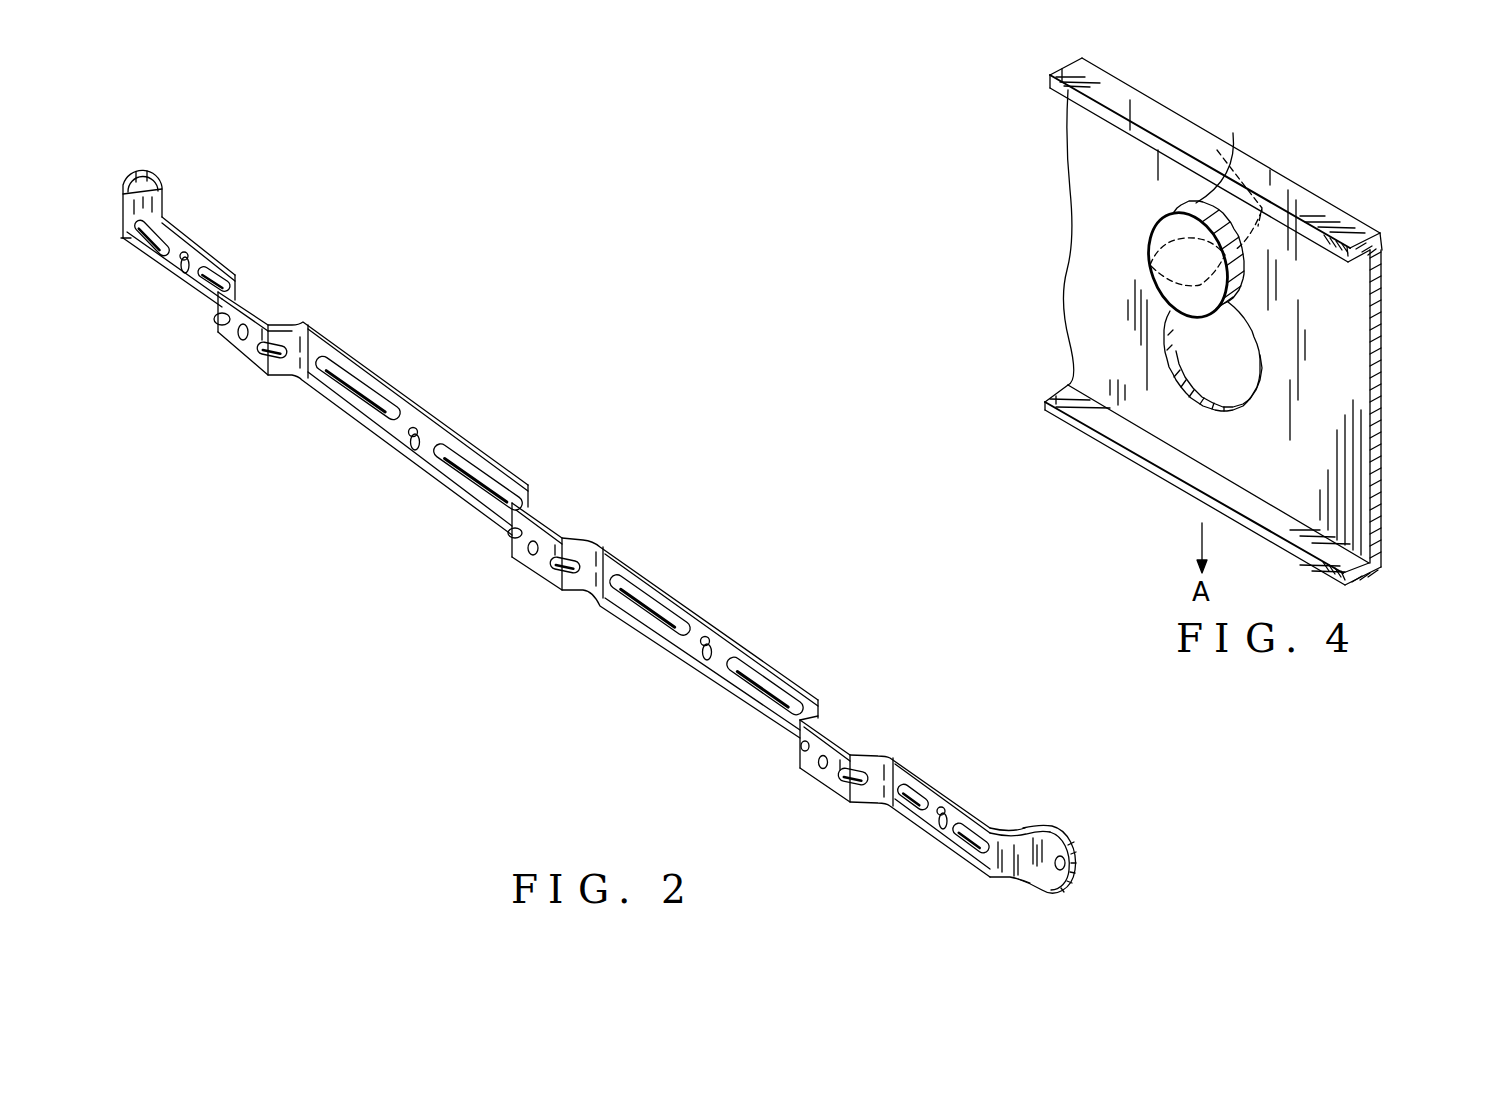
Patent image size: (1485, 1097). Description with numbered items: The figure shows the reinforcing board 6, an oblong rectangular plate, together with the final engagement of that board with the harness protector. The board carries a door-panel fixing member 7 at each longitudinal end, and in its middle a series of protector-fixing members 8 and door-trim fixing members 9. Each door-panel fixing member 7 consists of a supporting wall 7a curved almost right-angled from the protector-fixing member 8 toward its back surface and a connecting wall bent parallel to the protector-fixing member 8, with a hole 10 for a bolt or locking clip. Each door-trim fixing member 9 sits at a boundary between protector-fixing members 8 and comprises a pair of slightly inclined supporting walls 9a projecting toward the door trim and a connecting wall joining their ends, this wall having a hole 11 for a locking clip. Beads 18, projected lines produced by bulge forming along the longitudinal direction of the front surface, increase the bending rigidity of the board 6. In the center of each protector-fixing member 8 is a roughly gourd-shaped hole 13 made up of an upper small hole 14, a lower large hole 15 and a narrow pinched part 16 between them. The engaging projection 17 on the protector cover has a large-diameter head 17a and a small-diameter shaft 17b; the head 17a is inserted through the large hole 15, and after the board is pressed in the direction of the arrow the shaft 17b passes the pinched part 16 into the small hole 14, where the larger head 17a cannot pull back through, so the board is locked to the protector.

In FIG. 2, the reinforcing board 6 is at (671, 486).
In FIG. 4, the reinforcing board 6 is at (1376, 215).
In FIG. 2, the door-panel fixing member 7 is at (152, 168).
In FIG. 2, the supporting wall 7a is at (1018, 850).
In FIG. 2, the protector-fixing member 8 is at (195, 241).
In FIG. 4, the protector-fixing member 8 is at (1350, 408).
In FIG. 2, the door-trim fixing member 9 is at (247, 361).
In FIG. 2, the supporting walls 9a is at (820, 714).
In FIG. 2, the hole 10 is at (1073, 858).
In FIG. 2, the hole 11 is at (816, 769).
In FIG. 2, the hole 13 is at (660, 733).
In FIG. 2, the small hole 14 is at (701, 643).
In FIG. 4, the small hole 14 is at (1190, 228).
In FIG. 2, the large hole 15 is at (705, 660).
In FIG. 4, the large hole 15 is at (1193, 351).
In FIG. 4, the pinched part 16 is at (1188, 265).
In FIG. 4, the engaging projection 17 is at (1230, 83).
In FIG. 4, the head 17a is at (1232, 151).
In FIG. 4, the shaft 17b is at (1280, 183).
In FIG. 2, the bead 18 is at (800, 746).